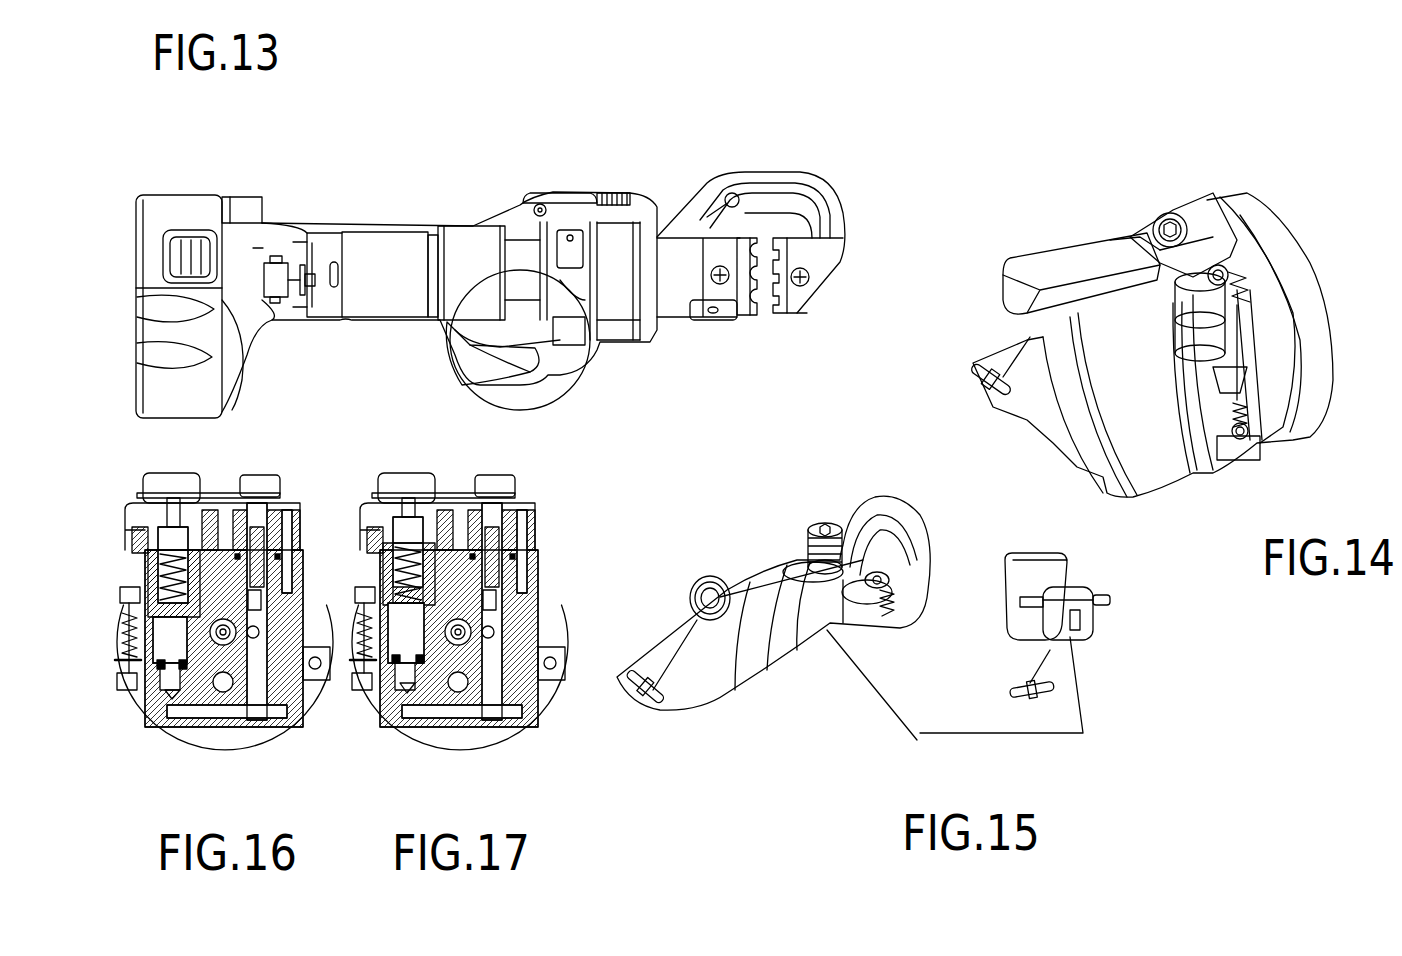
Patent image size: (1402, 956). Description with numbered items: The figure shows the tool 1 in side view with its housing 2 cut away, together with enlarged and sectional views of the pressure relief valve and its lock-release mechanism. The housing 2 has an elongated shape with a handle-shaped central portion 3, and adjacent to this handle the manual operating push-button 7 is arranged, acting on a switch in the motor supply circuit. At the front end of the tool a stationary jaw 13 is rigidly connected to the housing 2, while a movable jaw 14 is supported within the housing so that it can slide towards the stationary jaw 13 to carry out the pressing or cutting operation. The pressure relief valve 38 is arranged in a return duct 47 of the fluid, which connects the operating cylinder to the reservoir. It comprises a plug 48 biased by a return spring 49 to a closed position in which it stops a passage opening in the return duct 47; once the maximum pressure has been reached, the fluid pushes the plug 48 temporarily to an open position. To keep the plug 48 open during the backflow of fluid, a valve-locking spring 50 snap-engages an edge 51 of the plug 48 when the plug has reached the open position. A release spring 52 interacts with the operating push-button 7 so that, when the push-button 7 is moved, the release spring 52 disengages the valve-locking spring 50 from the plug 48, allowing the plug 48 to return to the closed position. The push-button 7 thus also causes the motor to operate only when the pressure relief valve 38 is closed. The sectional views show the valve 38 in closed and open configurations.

In FIG. 13, the tool 1 is at (506, 266).
In FIG. 13, the housing 2 is at (341, 321).
In FIG. 13, the handle-shaped central portion 3 is at (395, 321).
In FIG. 13, the manual operating push-button 7 is at (556, 395).
In FIG. 14, the manual operating push-button 7 is at (1060, 267).
In FIG. 15, the manual operating push-button 7 is at (1037, 567).
In FIG. 13, the stationary jaw 13 is at (810, 287).
In FIG. 13, the movable jaw 14 is at (747, 293).
In FIG. 13, the pressure relief valve 38 is at (541, 364).
In FIG. 16, the pressure relief valve 38 is at (178, 624).
In FIG. 17, the pressure relief valve 38 is at (463, 623).
In FIG. 16, the return duct 47 is at (197, 710).
In FIG. 17, the return duct 47 is at (462, 760).
In FIG. 16, the plug 48 is at (167, 633).
In FIG. 17, the plug 48 is at (369, 595).
In FIG. 16, the return spring 49 is at (163, 580).
In FIG. 17, the return spring 49 is at (368, 516).
In FIG. 14, the valve-locking spring 50 is at (1240, 272).
In FIG. 15, the valve-locking spring 50 is at (867, 567).
In FIG. 14, the edge 51 is at (1213, 253).
In FIG. 15, the edge 51 is at (890, 577).
In FIG. 14, the release spring 52 is at (1157, 242).
In FIG. 15, the release spring 52 is at (797, 563).